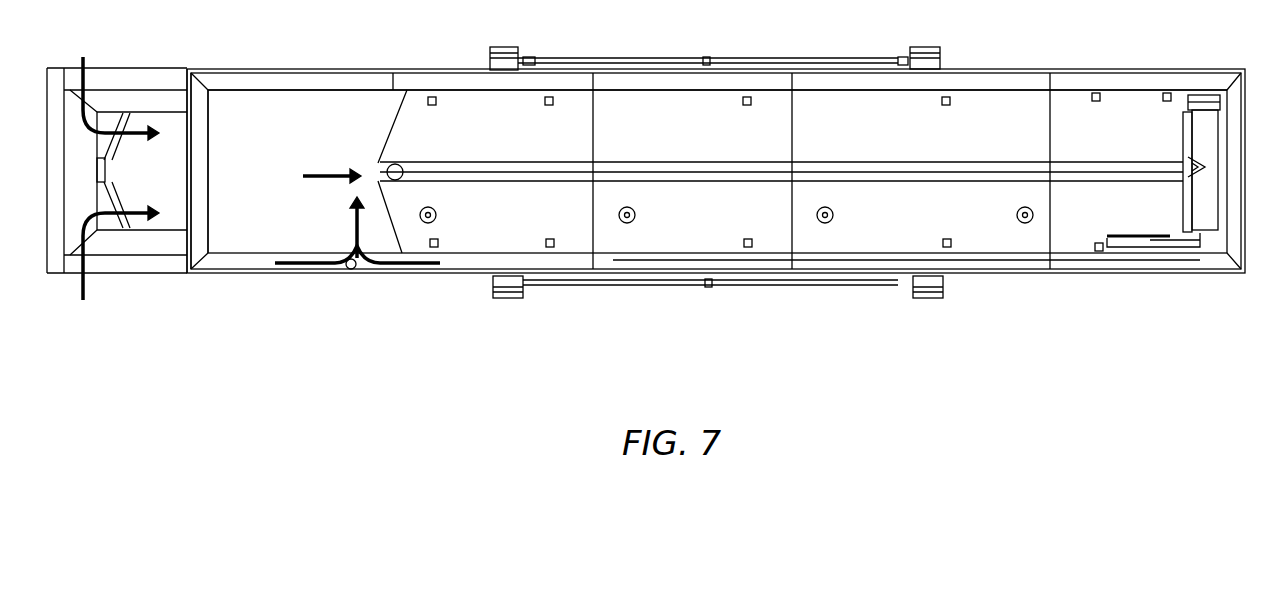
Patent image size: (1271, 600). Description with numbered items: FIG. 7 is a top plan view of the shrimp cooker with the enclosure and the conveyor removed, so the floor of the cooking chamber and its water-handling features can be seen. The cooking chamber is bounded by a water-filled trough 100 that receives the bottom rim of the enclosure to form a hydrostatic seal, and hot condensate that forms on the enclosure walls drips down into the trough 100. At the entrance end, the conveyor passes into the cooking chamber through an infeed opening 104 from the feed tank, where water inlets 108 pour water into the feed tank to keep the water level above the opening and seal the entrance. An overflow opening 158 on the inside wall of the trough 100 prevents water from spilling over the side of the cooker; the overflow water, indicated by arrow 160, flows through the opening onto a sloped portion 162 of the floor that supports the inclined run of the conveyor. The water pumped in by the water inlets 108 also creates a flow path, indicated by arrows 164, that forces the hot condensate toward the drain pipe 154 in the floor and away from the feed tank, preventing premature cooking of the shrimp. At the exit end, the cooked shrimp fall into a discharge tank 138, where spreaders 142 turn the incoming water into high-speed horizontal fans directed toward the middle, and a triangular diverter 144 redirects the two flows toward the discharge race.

The water-filled trough 100 is at (948, 262).
The infeed opening 104 is at (212, 118).
The water inlets 108 is at (86, 92).
The discharge tank 138 is at (1210, 237).
The spreaders 142 is at (1198, 97).
The triangular diverter 144 is at (1188, 192).
The drain pipe 154 is at (398, 168).
The overflow opening 158 is at (362, 260).
The overflow water arrow 160 is at (355, 222).
The sloped portion of the floor 162 is at (315, 97).
The flow path arrows 164 is at (118, 186).